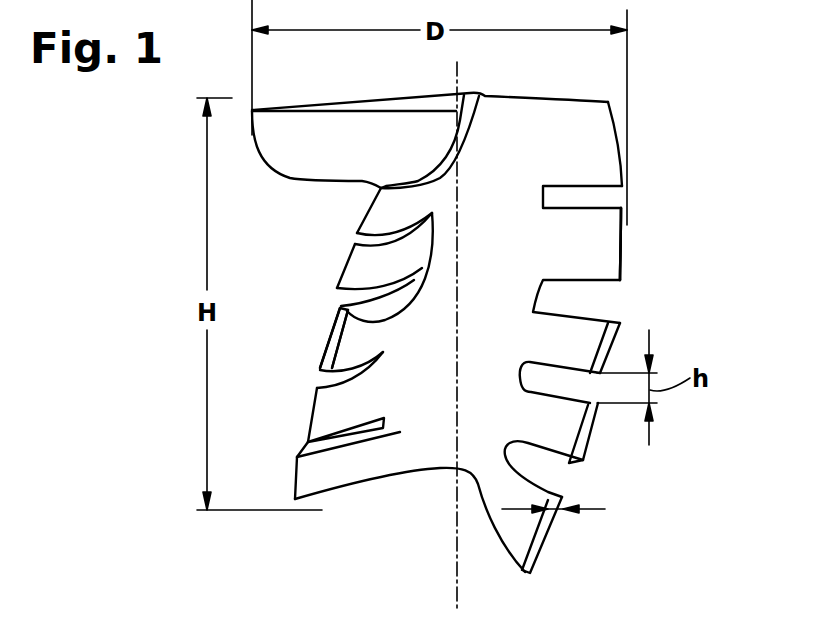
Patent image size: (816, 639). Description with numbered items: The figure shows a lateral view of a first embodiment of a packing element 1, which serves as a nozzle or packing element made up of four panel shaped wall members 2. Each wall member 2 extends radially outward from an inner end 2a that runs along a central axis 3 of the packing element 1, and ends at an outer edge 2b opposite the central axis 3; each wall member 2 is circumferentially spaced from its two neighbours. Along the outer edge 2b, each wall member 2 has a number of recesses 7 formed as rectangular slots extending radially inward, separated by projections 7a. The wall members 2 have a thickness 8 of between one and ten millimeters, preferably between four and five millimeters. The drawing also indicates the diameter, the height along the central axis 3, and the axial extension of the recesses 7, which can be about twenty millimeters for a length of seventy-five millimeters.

The packing element 1 is at (710, 68).
The wall member 2 is at (515, 158).
The inner end 2a is at (434, 482).
The outer edge 2b is at (634, 260).
The central axis 3 is at (456, 588).
The recess 7 is at (593, 198).
The projection 7a is at (593, 240).
The thickness 8 is at (563, 511).